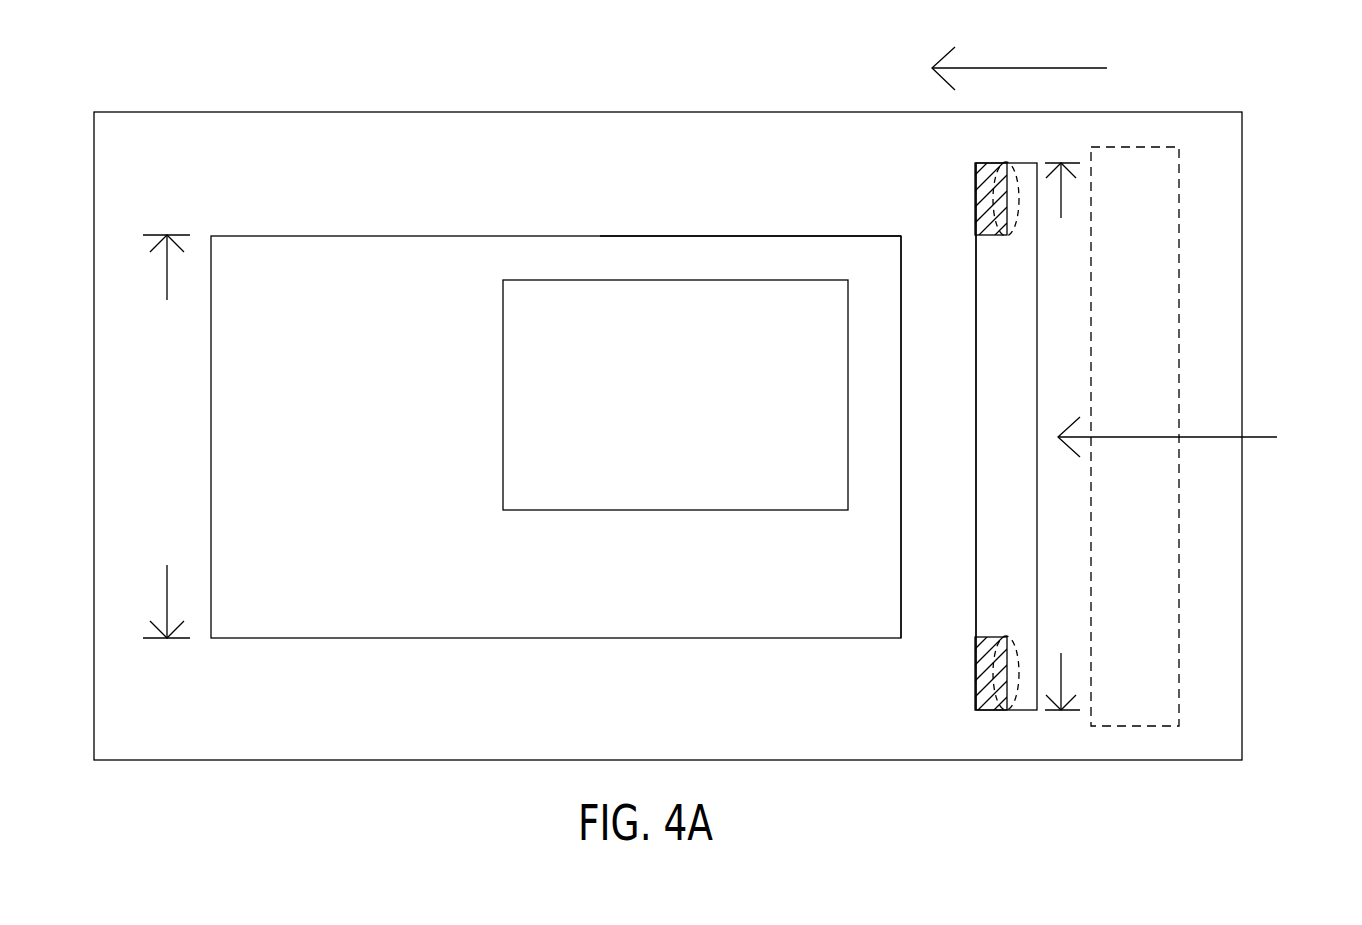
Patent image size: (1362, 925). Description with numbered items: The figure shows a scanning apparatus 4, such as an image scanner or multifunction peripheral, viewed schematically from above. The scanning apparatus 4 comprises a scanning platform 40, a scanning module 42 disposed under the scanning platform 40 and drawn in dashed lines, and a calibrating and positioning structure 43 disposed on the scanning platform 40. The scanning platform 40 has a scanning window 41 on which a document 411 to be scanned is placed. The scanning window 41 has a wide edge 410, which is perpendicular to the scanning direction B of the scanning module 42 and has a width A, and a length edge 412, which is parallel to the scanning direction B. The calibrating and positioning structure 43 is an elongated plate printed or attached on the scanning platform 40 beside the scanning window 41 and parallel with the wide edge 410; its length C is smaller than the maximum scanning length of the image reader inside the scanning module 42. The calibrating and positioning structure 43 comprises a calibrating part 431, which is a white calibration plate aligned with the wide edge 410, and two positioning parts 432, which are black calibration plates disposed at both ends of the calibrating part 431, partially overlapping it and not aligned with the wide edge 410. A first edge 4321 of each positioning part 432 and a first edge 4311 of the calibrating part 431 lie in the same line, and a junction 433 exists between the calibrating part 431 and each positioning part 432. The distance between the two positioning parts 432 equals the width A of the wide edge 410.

The scanning apparatus 4 is at (1295, 72).
The scanning platform 40 is at (1242, 342).
The scanning window 41 is at (593, 257).
The wide edge 410 is at (901, 318).
The document 411 is at (660, 280).
The length edge 412 is at (724, 236).
The scanning module 42 is at (1120, 240).
The calibrating and positioning structure 43 is at (1185, 437).
The calibrating part 431 is at (1012, 547).
The first edge of calibrating part 4311 is at (976, 437).
The positioning part 432 is at (931, 485).
The first edge of positioning part 4321 is at (975, 197).
The junction 433 is at (1012, 192).